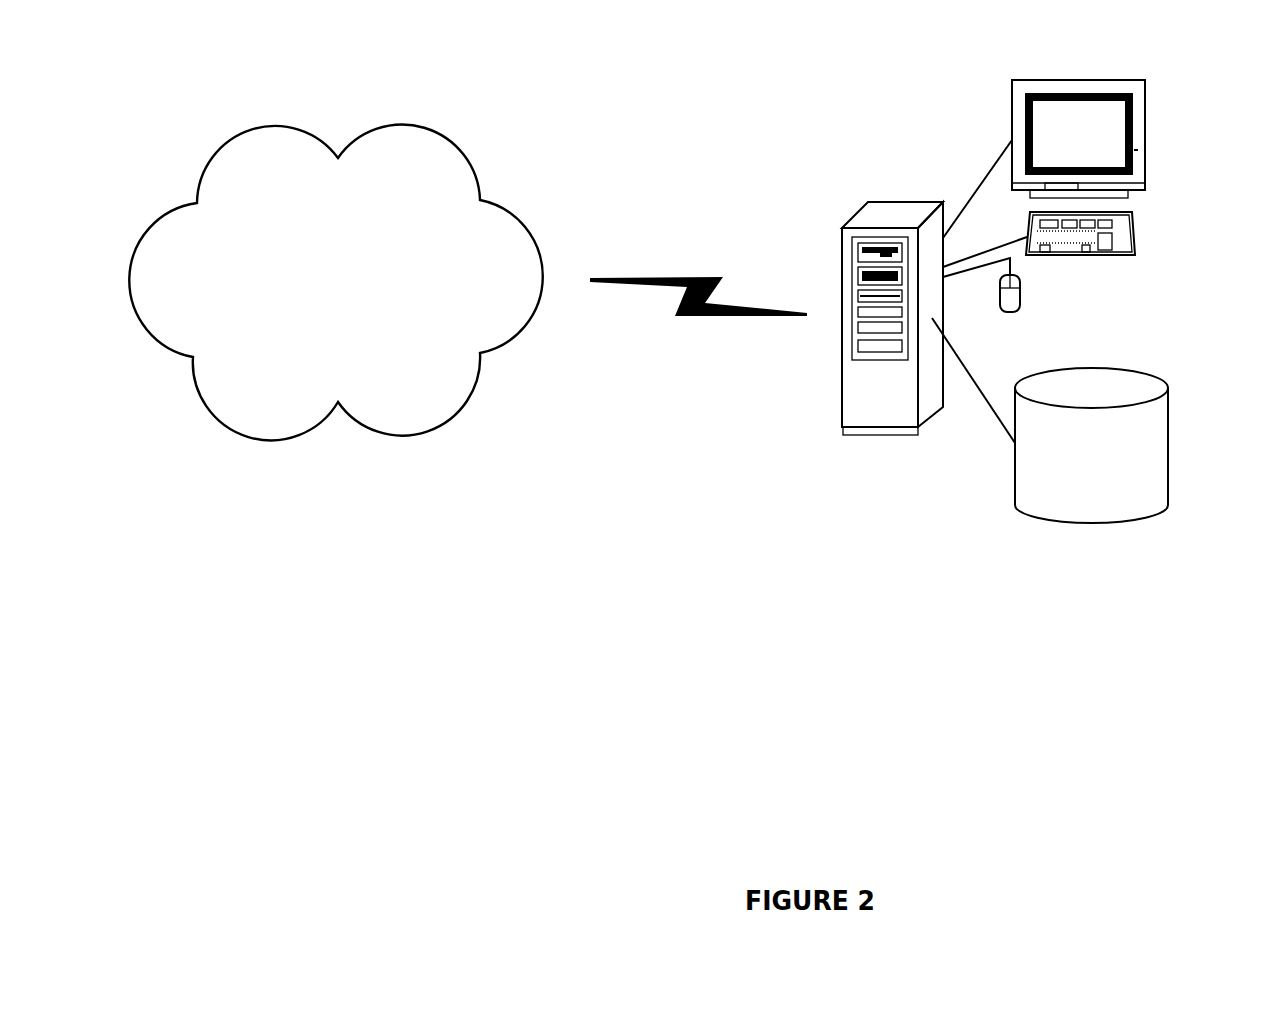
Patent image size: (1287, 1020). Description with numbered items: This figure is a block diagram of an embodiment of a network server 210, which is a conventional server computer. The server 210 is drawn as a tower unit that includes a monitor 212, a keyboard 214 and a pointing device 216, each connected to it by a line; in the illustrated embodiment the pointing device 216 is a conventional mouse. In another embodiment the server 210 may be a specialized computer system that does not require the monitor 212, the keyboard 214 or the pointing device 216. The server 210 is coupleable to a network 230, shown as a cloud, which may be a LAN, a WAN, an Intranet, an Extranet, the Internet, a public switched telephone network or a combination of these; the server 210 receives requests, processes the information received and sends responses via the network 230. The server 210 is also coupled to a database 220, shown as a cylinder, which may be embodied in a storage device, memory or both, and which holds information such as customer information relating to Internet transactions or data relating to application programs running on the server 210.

The network 230 is at (277, 125).
The network server 210 is at (883, 200).
The monitor 212 is at (1137, 80).
The keyboard 214 is at (1134, 232).
The pointing device 216 is at (1020, 287).
The database 220 is at (1160, 372).